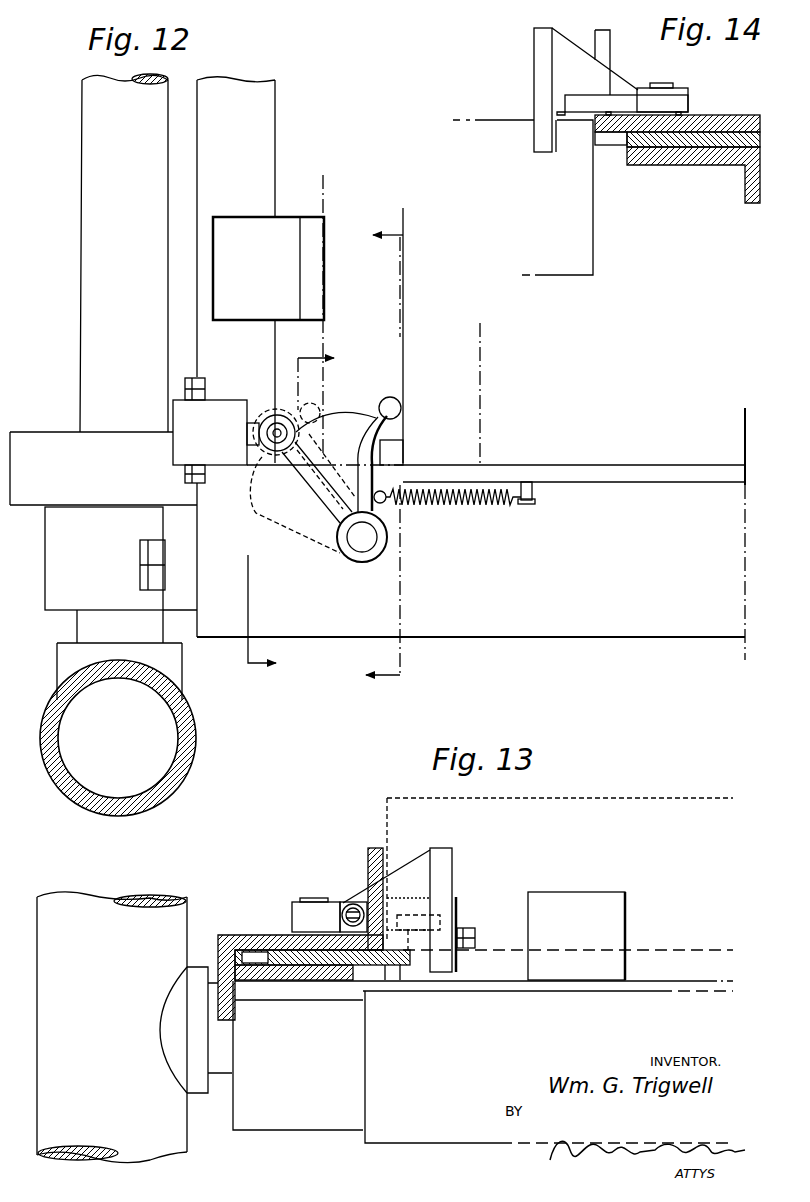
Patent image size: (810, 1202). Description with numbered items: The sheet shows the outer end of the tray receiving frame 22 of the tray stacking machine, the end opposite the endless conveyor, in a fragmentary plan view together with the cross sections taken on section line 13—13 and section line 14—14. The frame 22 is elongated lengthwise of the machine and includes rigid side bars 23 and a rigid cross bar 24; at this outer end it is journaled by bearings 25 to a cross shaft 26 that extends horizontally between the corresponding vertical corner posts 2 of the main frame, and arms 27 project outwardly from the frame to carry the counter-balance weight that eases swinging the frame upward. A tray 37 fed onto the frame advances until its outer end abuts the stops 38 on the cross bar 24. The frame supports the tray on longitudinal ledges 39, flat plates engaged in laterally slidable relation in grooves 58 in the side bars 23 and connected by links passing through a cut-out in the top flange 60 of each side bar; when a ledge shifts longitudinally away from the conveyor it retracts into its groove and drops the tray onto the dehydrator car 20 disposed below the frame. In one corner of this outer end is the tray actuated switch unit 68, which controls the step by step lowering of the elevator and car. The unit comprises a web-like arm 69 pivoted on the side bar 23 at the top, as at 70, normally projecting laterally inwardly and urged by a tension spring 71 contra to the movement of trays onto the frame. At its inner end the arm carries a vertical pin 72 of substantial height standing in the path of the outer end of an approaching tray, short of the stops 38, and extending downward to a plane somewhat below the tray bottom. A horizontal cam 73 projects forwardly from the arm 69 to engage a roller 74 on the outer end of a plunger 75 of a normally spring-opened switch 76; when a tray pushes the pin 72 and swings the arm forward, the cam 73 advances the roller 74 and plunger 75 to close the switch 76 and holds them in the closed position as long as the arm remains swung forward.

In FIG. 12, the vertical corner posts 2 is at (196, 728).
In FIG. 13, the vertical corner posts 2 is at (175, 927).
In FIG. 12, the section line 13— 13 is at (371, 456).
In FIG. 12, the section line 14— 14 is at (303, 514).
In FIG. 13, the dehydrator car 20 is at (387, 1052).
In FIG. 12, the tray receiving frame 22 is at (643, 464).
In FIG. 14, the tray receiving frame 22 is at (687, 167).
In FIG. 13, the tray receiving frame 22 is at (280, 987).
In FIG. 12, the rigid side bars 23 is at (567, 474).
In FIG. 13, the rigid side bars 23 is at (372, 848).
In FIG. 12, the rigid cross bar 24 is at (257, 133).
In FIG. 13, the rigid cross bar 24 is at (493, 993).
In FIG. 12, the bearings 25 is at (68, 593).
In FIG. 12, the cross shaft 26 is at (100, 178).
In FIG. 13, the cross shaft 26 is at (218, 1050).
In FIG. 12, the arms 27 is at (30, 447).
In FIG. 12, the tray 37 is at (430, 372).
In FIG. 14, the tray 37 is at (593, 243).
In FIG. 12, the stops 38 is at (312, 290).
In FIG. 13, the stops 38 is at (612, 922).
In FIG. 12, the longitudinal ledges 39 is at (390, 444).
In FIG. 14, the longitudinal ledges 39 is at (607, 146).
In FIG. 13, the longitudinal ledges 39 is at (398, 968).
In FIG. 13, the grooves 58 is at (260, 952).
In FIG. 12, the top flange 60 is at (560, 617).
In FIG. 14, the top flange 60 is at (695, 117).
In FIG. 13, the top flange 60 is at (240, 935).
In FIG. 12, the tray actuated switch unit 68 is at (303, 487).
In FIG. 12, the web-like arm 69 is at (365, 457).
In FIG. 14, the web-like arm 69 is at (596, 80).
In FIG. 13, the web-like arm 69 is at (402, 877).
In FIG. 12, the pivot 70 is at (358, 540).
In FIG. 14, the pivot 70 is at (661, 84).
In FIG. 13, the pivot 70 is at (305, 900).
In FIG. 12, the tension spring 71 is at (473, 505).
In FIG. 13, the tension spring 71 is at (350, 900).
In FIG. 12, the vertical pin 72 is at (396, 406).
In FIG. 14, the vertical pin 72 is at (545, 133).
In FIG. 13, the vertical pin 72 is at (443, 858).
In FIG. 12, the horizontal cam 73 is at (332, 433).
In FIG. 14, the horizontal cam 73 is at (608, 103).
In FIG. 12, the roller 74 is at (268, 447).
In FIG. 13, the roller 74 is at (440, 913).
In FIG. 12, the plunger 75 is at (250, 434).
In FIG. 12, the switch 76 is at (218, 399).
In FIG. 13, the switch 76 is at (458, 968).